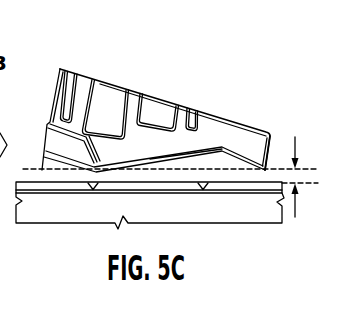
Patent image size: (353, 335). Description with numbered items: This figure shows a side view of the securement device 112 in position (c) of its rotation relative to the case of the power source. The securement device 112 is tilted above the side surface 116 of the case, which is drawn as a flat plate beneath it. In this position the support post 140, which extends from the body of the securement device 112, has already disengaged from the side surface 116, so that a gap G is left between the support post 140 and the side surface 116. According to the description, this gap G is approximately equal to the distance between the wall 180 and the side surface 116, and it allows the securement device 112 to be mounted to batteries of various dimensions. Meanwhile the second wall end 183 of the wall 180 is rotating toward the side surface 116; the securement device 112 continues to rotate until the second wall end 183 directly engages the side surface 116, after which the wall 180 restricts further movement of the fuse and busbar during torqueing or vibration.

The securement device 112 is at (162, 85).
The side surface 116 is at (35, 182).
The support post 140 is at (75, 153).
The wall 180 is at (194, 137).
The second wall end 183 is at (258, 145).
The gap G is at (298, 206).